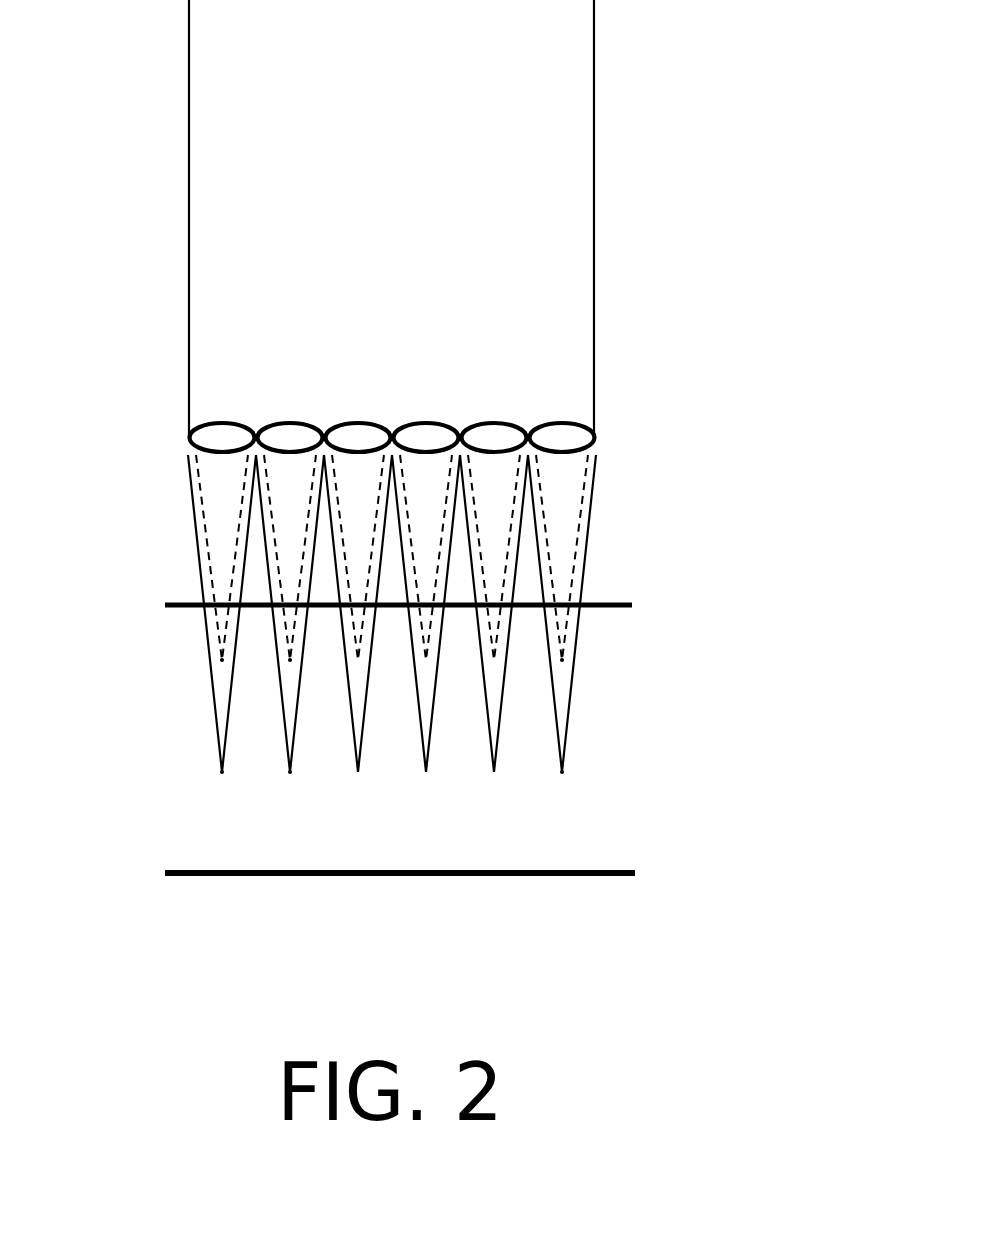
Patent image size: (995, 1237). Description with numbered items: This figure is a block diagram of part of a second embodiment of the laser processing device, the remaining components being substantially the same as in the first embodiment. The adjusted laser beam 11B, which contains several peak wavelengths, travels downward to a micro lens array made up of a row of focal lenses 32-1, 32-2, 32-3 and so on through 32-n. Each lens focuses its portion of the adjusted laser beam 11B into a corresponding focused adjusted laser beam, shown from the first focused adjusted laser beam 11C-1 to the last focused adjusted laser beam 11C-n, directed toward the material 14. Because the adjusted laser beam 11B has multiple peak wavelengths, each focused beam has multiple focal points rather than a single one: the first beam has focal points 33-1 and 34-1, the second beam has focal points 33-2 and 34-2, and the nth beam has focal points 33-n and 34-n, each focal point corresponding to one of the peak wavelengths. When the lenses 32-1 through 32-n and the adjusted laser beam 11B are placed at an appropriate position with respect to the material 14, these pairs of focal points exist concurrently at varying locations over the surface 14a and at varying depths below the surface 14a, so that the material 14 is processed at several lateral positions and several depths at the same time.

The adjusted laser beam 11B is at (566, 177).
The focal lens 32-1 is at (215, 432).
The focal lens 32-2 is at (282, 432).
The focal lens 32-3 is at (360, 432).
The focal lens 32-n is at (585, 433).
The focused adjusted laser beam 11C-1 is at (220, 500).
The focused adjusted laser beam 11C-n is at (560, 537).
The focal point 33-1 is at (220, 660).
The focal point 33-2 is at (290, 658).
The focal point 33-n is at (562, 660).
The focal point 34-1 is at (222, 772).
The focal point 34-2 is at (291, 774).
The focal point 34-n is at (562, 773).
The surface 14a is at (605, 605).
The material 14 is at (815, 605).